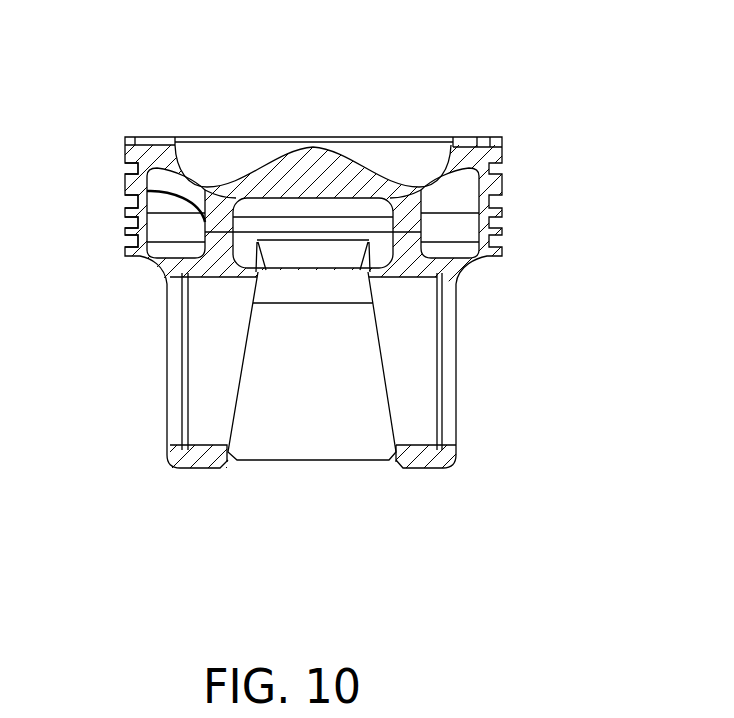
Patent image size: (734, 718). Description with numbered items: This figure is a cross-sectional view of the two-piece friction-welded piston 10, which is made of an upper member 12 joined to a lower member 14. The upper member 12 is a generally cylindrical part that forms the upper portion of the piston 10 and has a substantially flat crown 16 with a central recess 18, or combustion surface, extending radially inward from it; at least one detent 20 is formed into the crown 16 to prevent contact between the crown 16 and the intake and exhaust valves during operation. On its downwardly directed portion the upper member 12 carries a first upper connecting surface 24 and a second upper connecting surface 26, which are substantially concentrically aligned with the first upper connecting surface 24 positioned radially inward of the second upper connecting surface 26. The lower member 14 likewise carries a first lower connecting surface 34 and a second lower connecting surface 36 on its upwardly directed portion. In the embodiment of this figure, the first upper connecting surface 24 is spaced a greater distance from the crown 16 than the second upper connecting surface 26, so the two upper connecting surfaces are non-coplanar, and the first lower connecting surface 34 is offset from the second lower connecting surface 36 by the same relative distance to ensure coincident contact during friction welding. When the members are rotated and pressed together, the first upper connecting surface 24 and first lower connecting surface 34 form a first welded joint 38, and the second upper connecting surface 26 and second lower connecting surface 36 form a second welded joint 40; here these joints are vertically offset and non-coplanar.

The piston 10 is at (658, 86).
The upper member 12 is at (130, 150).
The lower member 14 is at (175, 464).
The crown 16 is at (442, 137).
The central recess 18 is at (397, 185).
The detent 20 is at (479, 142).
The first upper connecting surface 24 is at (147, 190).
The second upper connecting surface 26 is at (146, 212).
The first lower connecting surface 34 is at (404, 244).
The second lower connecting surface 36 is at (146, 218).
The first welded joint 38 is at (414, 240).
The second welded joint 40 is at (488, 210).